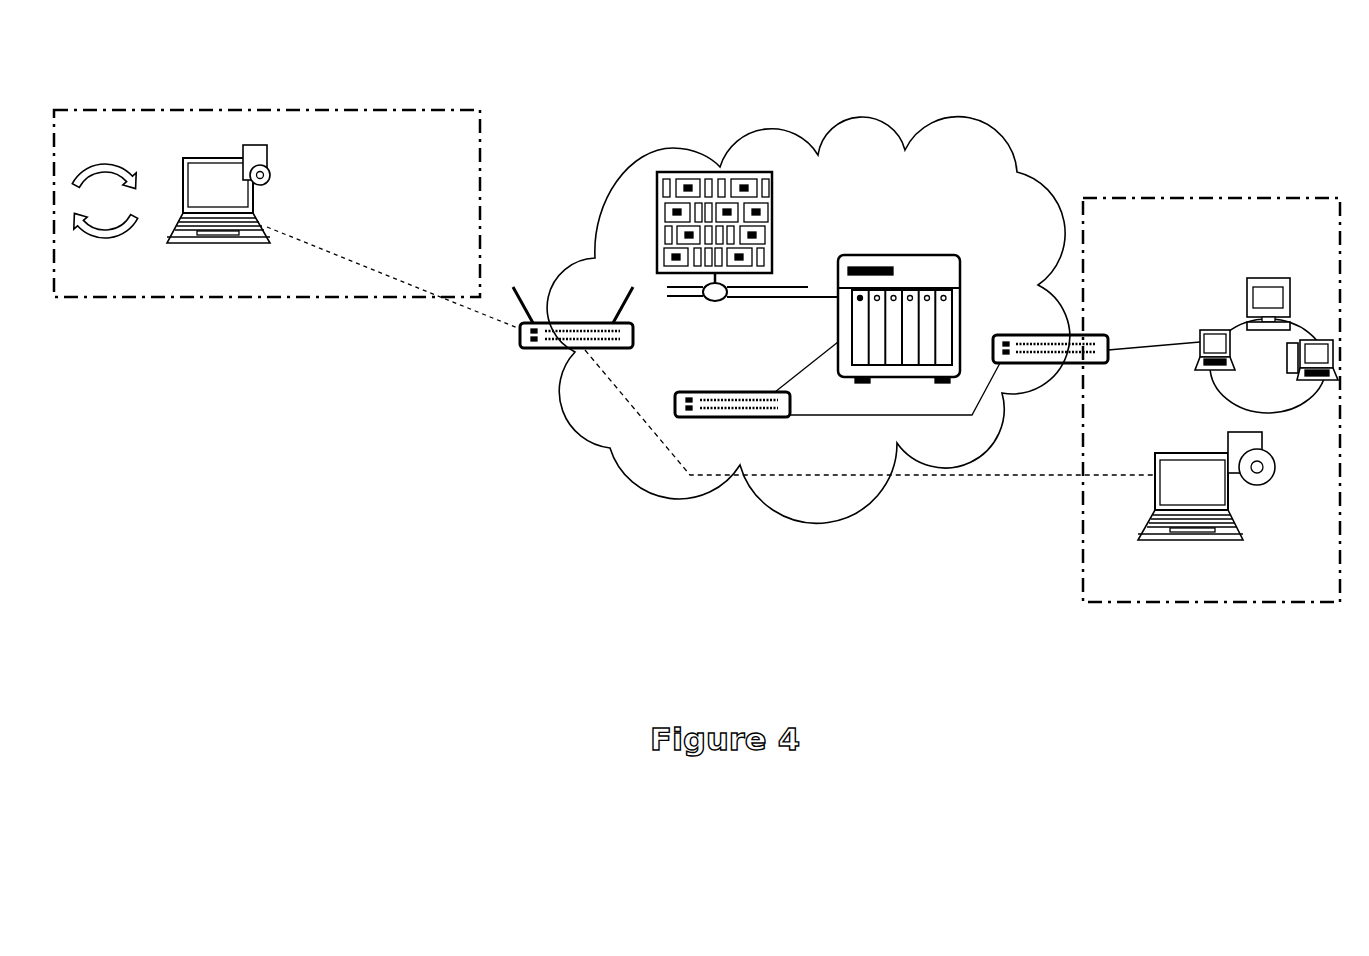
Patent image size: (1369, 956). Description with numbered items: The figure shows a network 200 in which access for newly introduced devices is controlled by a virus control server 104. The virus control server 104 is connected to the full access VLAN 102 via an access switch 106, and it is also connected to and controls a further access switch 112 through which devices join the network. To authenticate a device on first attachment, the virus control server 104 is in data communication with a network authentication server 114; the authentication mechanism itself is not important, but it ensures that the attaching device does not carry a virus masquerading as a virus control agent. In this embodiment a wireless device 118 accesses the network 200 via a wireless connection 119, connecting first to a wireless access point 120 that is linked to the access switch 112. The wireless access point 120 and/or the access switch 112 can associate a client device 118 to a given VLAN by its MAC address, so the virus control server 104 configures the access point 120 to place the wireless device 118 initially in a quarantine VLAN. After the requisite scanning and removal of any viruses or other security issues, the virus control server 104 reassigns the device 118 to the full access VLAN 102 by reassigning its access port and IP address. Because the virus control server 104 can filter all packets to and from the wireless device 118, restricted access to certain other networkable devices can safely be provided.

The full access VLAN 102 is at (1280, 258).
The virus control server 104 is at (960, 287).
The access switch 106 is at (1073, 336).
The access switch 112 is at (730, 417).
The network authentication server 114 is at (725, 173).
The device 118 is at (233, 157).
The wireless connection 119 is at (380, 273).
The wireless access point 120 is at (588, 325).
The network 200 is at (900, 83).